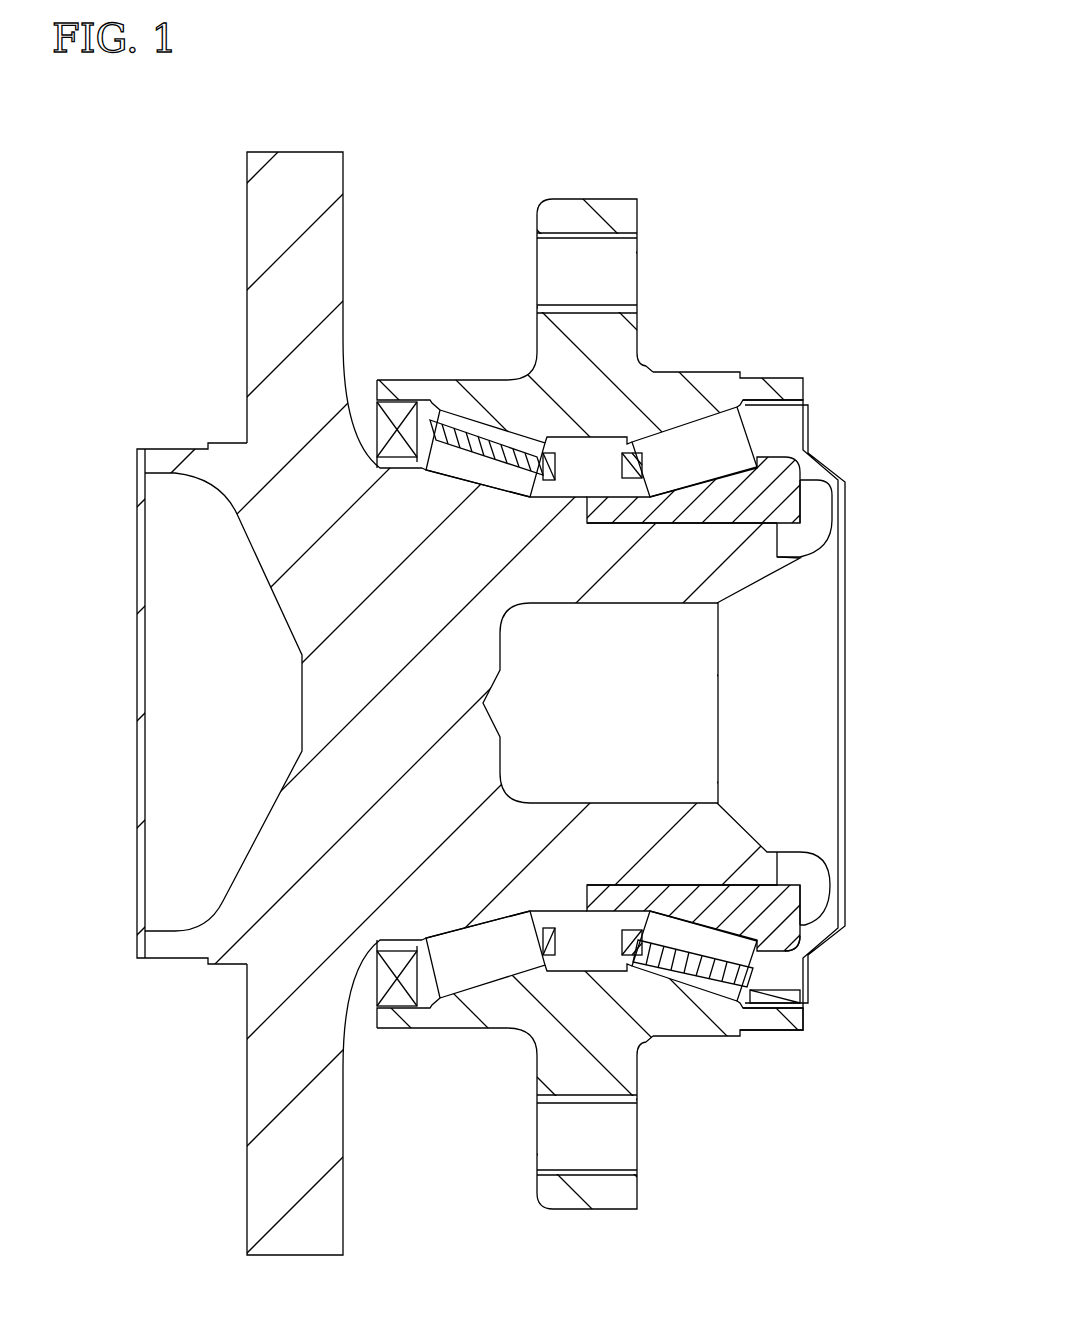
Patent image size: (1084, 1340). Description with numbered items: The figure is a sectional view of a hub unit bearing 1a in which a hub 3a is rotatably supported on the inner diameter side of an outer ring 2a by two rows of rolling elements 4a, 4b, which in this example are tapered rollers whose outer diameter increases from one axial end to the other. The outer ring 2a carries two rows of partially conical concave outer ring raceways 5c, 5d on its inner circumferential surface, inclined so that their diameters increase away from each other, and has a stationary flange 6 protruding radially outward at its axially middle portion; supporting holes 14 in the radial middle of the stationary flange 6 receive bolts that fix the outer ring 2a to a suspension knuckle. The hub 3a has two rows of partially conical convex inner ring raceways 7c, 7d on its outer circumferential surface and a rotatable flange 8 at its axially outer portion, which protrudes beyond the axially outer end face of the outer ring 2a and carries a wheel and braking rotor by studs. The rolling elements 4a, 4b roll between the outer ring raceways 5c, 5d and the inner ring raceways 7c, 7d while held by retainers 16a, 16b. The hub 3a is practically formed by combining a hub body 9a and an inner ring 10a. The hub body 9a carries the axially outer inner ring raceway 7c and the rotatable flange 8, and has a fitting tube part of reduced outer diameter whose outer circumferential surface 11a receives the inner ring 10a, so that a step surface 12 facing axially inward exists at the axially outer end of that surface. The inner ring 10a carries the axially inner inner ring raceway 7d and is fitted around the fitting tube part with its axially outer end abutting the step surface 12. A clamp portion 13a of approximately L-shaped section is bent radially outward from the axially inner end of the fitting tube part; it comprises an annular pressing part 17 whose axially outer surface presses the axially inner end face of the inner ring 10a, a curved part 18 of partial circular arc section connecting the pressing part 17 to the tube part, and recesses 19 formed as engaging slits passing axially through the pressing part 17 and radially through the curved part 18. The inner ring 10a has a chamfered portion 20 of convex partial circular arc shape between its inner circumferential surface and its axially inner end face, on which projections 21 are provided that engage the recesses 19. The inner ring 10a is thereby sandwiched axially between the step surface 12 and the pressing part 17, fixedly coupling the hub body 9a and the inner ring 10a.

The hub unit bearing 1a is at (190, 197).
The outer ring 2a is at (618, 342).
The hub 3a is at (131, 742).
The rolling elements 4a is at (500, 445).
The rolling elements 4b is at (745, 452).
The outer ring raceway 5c is at (460, 438).
The outer ring raceway 5d is at (705, 410).
The stationary flange 6 is at (612, 215).
The inner ring raceway 7c is at (470, 455).
The inner ring raceway 7d is at (775, 465).
The rotatable flange 8 is at (300, 170).
The hub body 9a is at (232, 460).
The inner ring 10a is at (792, 992).
The outer circumferential surface 11a is at (700, 530).
The step surface 12 is at (597, 920).
The clamp portion 13a is at (812, 932).
The supporting holes 14 is at (618, 243).
The retainer 16a is at (400, 430).
The retainer 16b is at (772, 1003).
The pressing part 17 is at (842, 885).
The curved part 18 is at (808, 862).
The recesses 19 is at (802, 545).
The chamfered portion 20 is at (826, 905).
The projections 21 is at (832, 485).